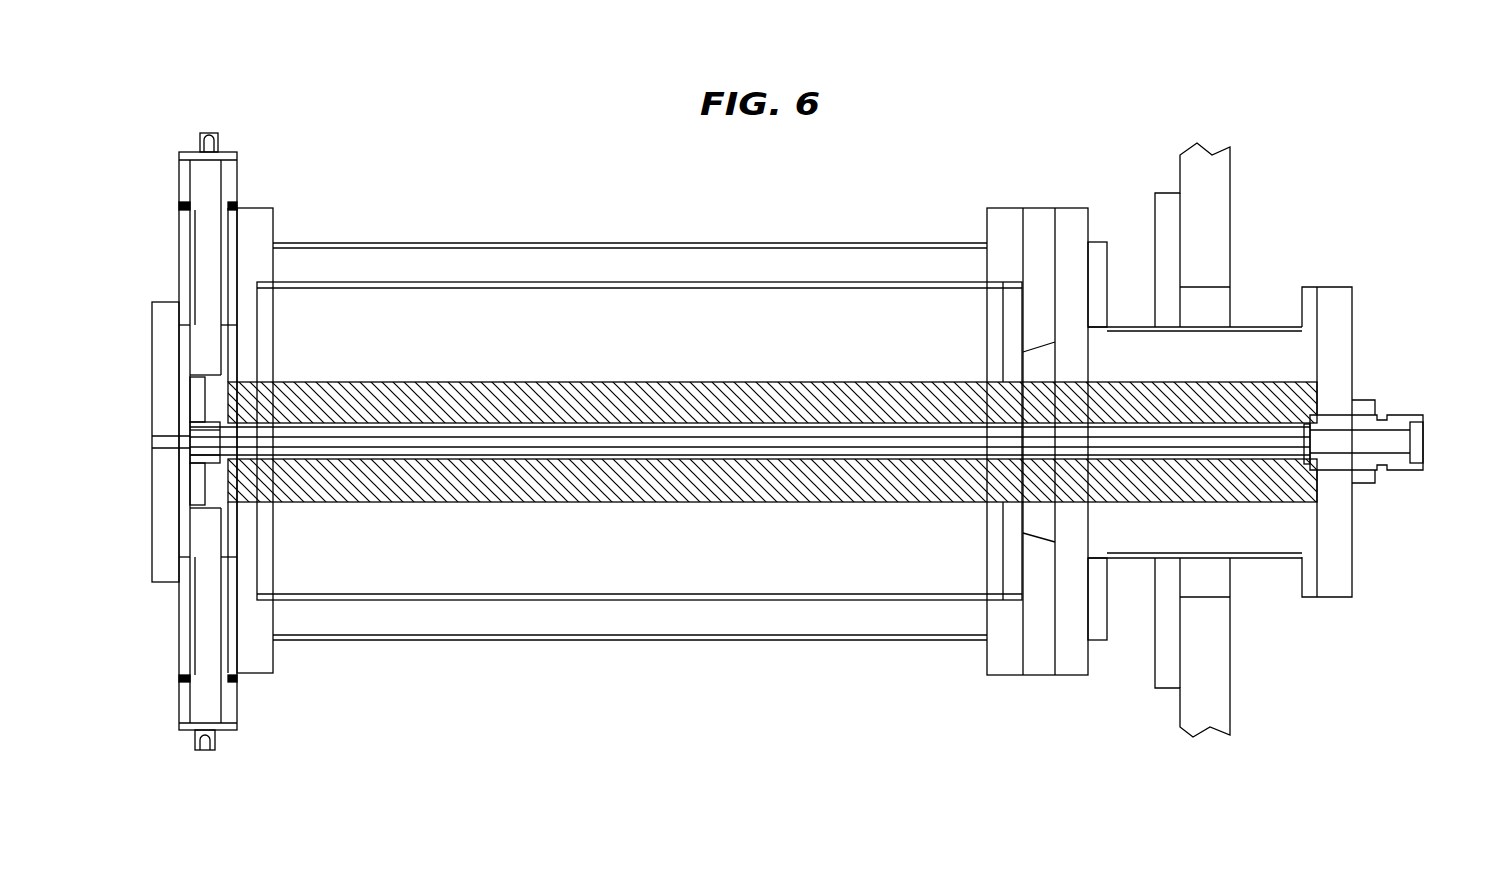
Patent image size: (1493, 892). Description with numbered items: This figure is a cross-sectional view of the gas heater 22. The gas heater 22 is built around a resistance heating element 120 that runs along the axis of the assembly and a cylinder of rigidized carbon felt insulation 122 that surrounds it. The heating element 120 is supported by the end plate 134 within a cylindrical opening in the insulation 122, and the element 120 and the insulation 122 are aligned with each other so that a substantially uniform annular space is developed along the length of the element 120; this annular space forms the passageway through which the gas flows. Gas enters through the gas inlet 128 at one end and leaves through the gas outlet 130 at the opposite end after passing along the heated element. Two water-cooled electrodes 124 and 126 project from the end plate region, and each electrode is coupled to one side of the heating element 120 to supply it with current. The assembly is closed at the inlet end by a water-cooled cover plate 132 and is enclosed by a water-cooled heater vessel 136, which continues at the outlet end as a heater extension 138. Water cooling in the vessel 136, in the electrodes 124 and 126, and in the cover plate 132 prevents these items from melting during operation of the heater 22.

The gas heater 22 is at (643, 754).
The resistance heating element 120 is at (430, 440).
The cylinder of rigidized carbon felt insulation 122 is at (569, 382).
The water-cooled electrode 124 is at (187, 152).
The water-cooled electrode 126 is at (187, 731).
The gas inlet 128 is at (152, 444).
The gas outlet 130 is at (1425, 440).
The water-cooled cover plate 132 is at (152, 323).
The end plate 134 is at (180, 240).
The water-cooled heater vessel 136 is at (380, 642).
The heater extension 138 is at (1125, 560).